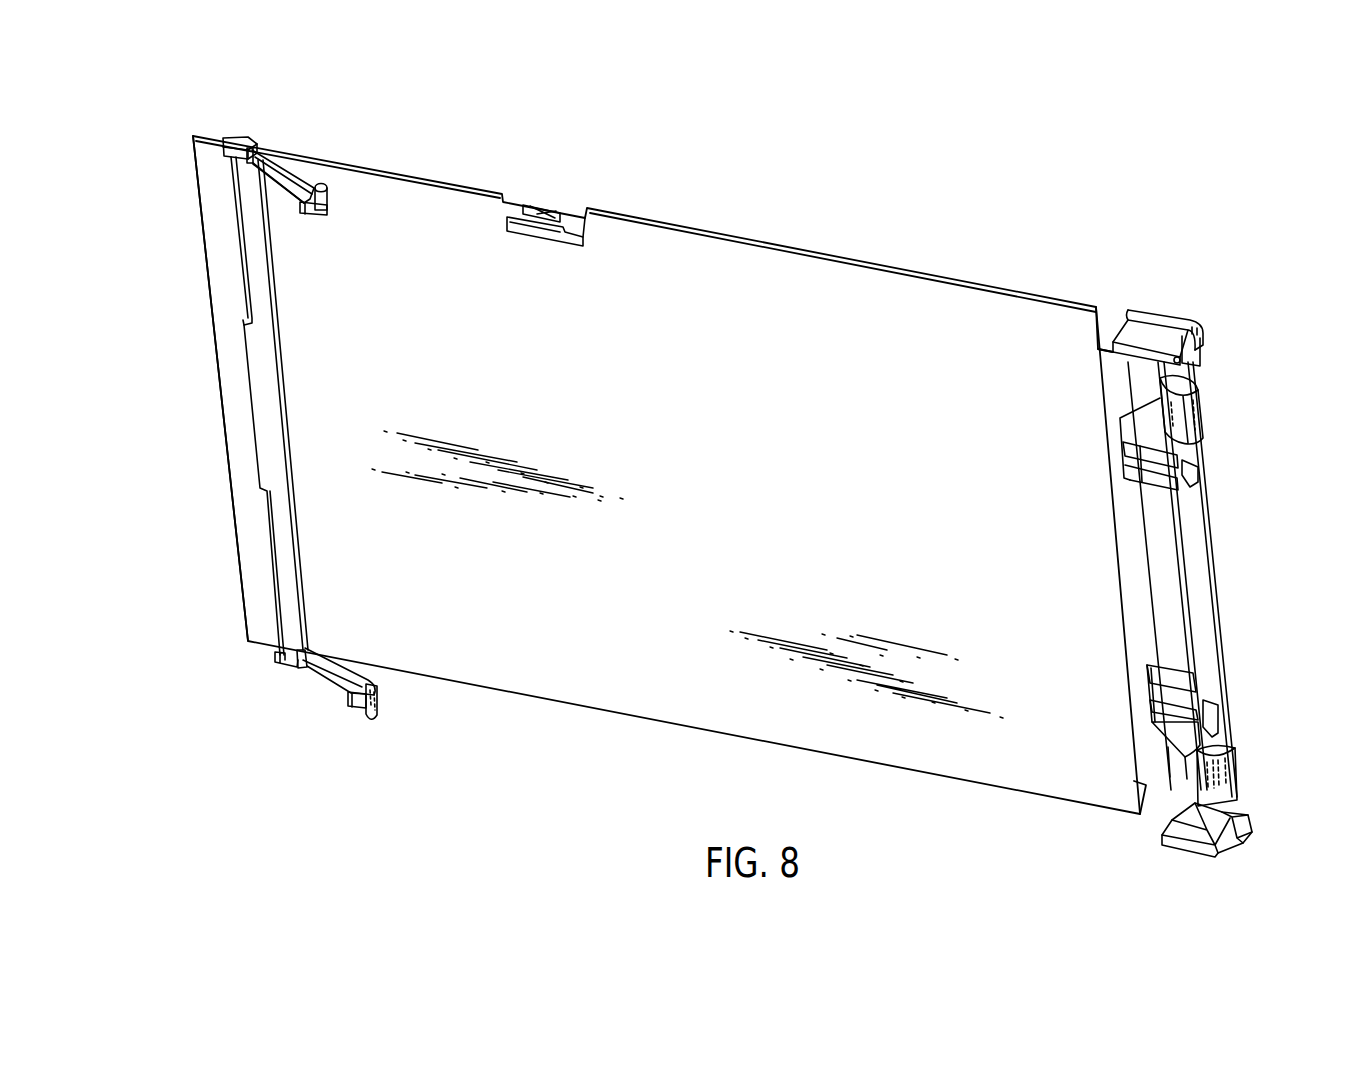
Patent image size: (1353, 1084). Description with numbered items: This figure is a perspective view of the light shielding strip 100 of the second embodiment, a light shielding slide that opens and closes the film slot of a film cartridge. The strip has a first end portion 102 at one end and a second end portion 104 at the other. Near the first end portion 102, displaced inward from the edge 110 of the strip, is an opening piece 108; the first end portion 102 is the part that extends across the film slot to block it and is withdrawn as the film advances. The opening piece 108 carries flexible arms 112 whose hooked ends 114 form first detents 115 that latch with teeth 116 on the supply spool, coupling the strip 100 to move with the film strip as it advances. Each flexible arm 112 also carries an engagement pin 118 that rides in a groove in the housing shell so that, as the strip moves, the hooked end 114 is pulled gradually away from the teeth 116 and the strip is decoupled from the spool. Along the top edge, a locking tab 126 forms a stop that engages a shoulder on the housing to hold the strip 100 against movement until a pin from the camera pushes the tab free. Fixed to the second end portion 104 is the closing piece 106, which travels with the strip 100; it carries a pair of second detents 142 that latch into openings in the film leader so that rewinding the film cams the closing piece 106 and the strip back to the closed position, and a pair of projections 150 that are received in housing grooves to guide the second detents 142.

The light shielding strip 100 is at (790, 486).
The first end portion 102 is at (206, 152).
The second end portion 104 is at (1098, 372).
The closing piece 106 is at (1165, 306).
The opening piece 108 is at (268, 354).
The edge 110 is at (208, 289).
The flexible arms 112 is at (292, 180).
The hooked ends 114 is at (315, 220).
The first detents 115 is at (318, 684).
The teeth 116 is at (290, 210).
The engagement pin 118 is at (330, 194).
The locking tab 126 is at (527, 234).
The second detents 142 is at (1208, 477).
The projections 150 is at (1190, 318).